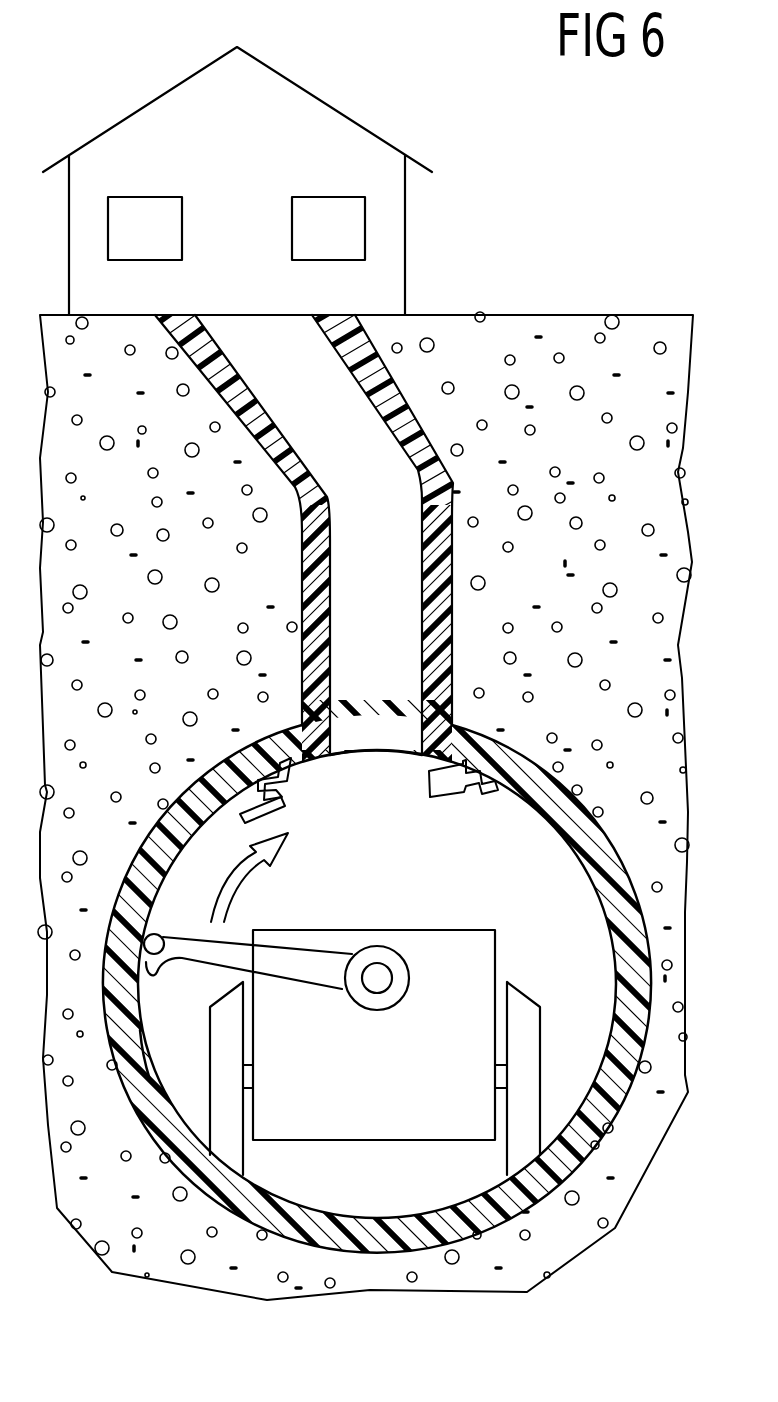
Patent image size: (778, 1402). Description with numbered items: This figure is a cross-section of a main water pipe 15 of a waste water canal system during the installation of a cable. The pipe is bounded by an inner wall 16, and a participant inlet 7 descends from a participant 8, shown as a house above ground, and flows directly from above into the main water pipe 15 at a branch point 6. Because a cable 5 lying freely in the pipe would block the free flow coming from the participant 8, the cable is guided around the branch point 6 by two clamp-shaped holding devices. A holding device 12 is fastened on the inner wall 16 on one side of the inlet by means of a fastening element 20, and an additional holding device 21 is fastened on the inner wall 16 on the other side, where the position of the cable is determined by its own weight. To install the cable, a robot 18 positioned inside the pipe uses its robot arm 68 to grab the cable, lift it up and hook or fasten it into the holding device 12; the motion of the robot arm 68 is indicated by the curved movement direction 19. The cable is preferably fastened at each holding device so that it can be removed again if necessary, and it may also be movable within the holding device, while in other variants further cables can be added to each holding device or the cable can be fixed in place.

The cable 5 is at (160, 934).
The branch point 6 is at (380, 740).
The participant inlet 7 is at (400, 397).
The participant 8 is at (388, 205).
The holding device 12 is at (263, 807).
The main water pipe 15 is at (140, 1053).
The inner wall 16 is at (572, 847).
The robot 18 is at (375, 1118).
The movement direction 19 is at (237, 887).
The fastening element 20 is at (283, 783).
The additional holding device 21 is at (463, 797).
The robot arm 68 is at (388, 998).